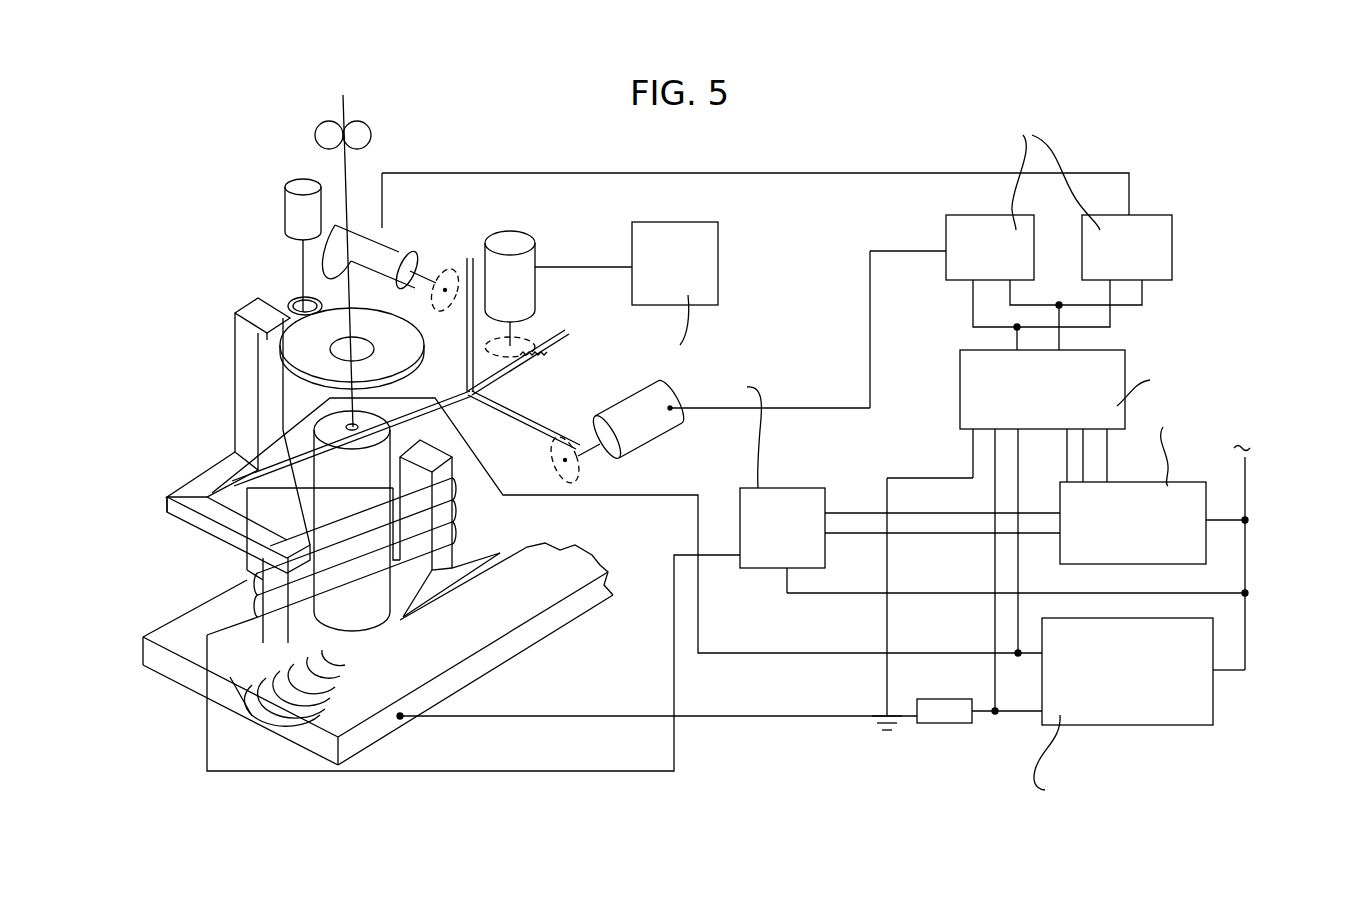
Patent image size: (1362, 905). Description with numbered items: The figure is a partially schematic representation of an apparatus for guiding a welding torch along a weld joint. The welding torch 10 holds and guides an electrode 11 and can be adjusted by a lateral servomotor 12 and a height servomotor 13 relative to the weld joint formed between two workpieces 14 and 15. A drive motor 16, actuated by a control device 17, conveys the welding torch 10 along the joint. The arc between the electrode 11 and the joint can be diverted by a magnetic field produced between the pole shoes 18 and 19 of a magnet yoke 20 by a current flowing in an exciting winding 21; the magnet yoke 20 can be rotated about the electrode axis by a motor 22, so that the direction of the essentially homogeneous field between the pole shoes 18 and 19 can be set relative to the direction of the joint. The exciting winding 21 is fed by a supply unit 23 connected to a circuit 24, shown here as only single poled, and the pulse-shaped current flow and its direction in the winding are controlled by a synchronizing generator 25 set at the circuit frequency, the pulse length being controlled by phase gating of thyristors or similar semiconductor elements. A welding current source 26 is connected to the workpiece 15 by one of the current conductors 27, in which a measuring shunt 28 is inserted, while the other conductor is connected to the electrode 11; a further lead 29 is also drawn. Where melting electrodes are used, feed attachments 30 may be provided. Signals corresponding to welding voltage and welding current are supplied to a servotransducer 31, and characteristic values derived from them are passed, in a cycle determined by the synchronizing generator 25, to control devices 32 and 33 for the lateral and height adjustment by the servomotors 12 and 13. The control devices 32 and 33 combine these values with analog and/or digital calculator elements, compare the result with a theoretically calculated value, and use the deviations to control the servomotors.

The welding torch 10 is at (352, 469).
The electrode 11 is at (347, 205).
The lateral servomotor 12 is at (680, 424).
The height servomotor 13 is at (397, 238).
The workpiece 14 is at (176, 623).
The workpiece 15 is at (493, 663).
The drive motor 16 is at (537, 252).
The control device 17 is at (720, 243).
The pole shoe 18 is at (330, 650).
The pole shoe 19 is at (447, 585).
The magnet yoke 20 is at (217, 463).
The exciting winding 21 is at (257, 594).
The motor 22 is at (293, 178).
The supply unit 23 is at (803, 470).
The circuit 24 is at (1243, 478).
The synchronizing generator 25 is at (1118, 479).
The welding current source 26 is at (1120, 727).
The current conductor 27 is at (758, 716).
The measuring shunt 28 is at (942, 725).
The lead wire 29 is at (635, 492).
The feed attachments 30 is at (358, 122).
The servotransducer 31 is at (960, 383).
The control device 32 is at (946, 238).
The control device 33 is at (1172, 245).